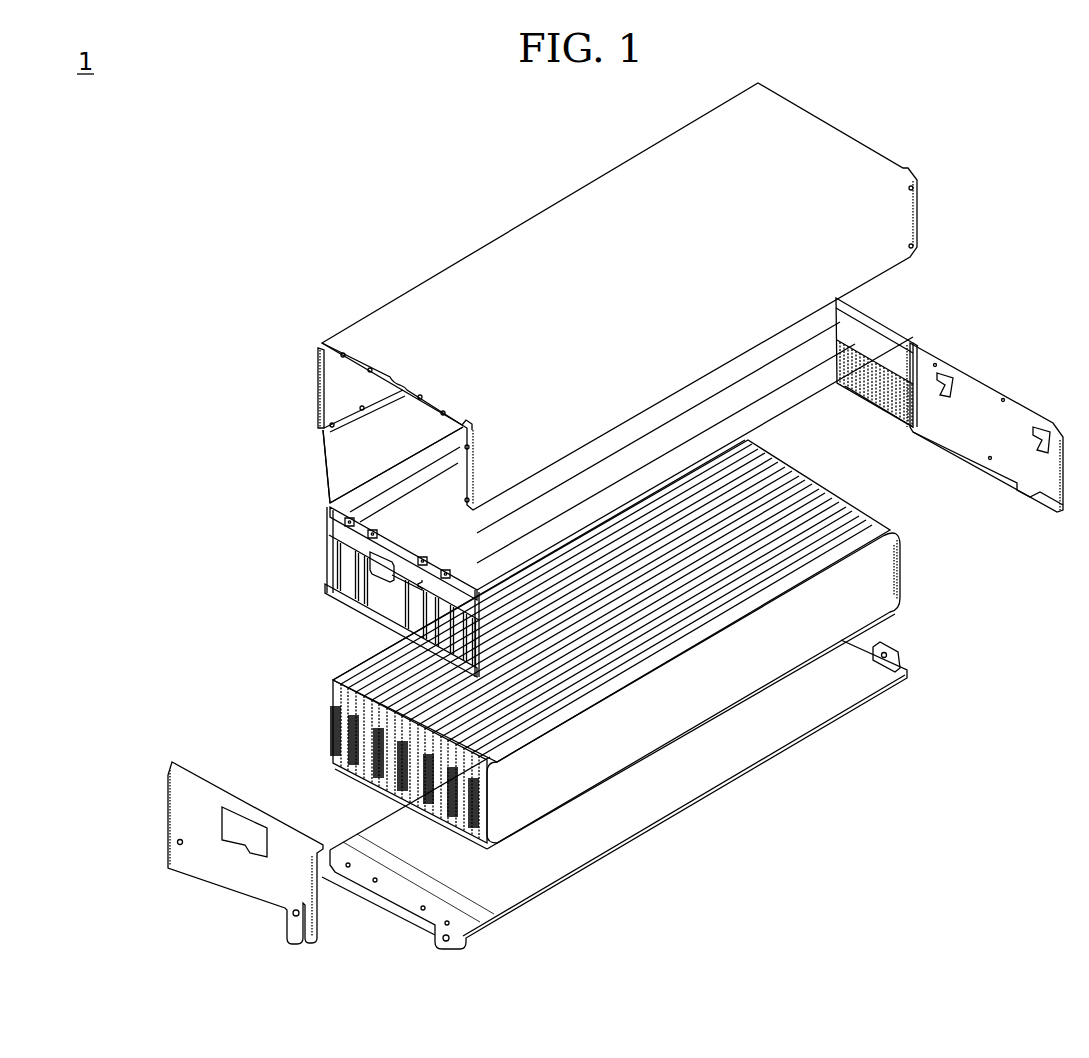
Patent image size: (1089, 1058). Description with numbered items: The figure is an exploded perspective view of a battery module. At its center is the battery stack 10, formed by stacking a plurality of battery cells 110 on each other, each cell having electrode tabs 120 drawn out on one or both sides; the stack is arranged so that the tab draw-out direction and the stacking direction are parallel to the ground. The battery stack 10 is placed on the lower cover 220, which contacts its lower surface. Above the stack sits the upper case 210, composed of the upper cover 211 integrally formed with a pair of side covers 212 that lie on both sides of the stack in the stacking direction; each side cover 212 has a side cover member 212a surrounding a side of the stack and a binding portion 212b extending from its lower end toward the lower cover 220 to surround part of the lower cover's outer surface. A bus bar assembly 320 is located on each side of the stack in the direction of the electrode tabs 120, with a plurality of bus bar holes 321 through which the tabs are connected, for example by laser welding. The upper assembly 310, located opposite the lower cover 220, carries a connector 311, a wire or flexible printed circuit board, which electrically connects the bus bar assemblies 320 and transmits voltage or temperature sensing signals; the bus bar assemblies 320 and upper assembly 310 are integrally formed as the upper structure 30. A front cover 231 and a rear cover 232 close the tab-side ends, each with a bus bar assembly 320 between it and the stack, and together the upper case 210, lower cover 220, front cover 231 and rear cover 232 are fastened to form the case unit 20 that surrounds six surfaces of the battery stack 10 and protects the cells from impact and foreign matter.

The battery stack 10 is at (888, 614).
The battery cells 110 is at (537, 802).
The electrode tabs 120 is at (448, 836).
The case unit 20 is at (133, 279).
The upper case 210 is at (203, 382).
The upper cover 211 is at (323, 353).
The side covers 212 is at (268, 442).
The side cover member 212a is at (390, 427).
The binding portion 212b is at (336, 496).
The lower cover 220 is at (390, 833).
The front cover 231 is at (223, 787).
The rear cover 232 is at (920, 352).
The upper structure 30 is at (868, 316).
The upper assembly 310 is at (330, 515).
The connector 311 is at (353, 588).
The bus bar assembly 320 is at (330, 588).
The bus bar holes 321 is at (880, 418).